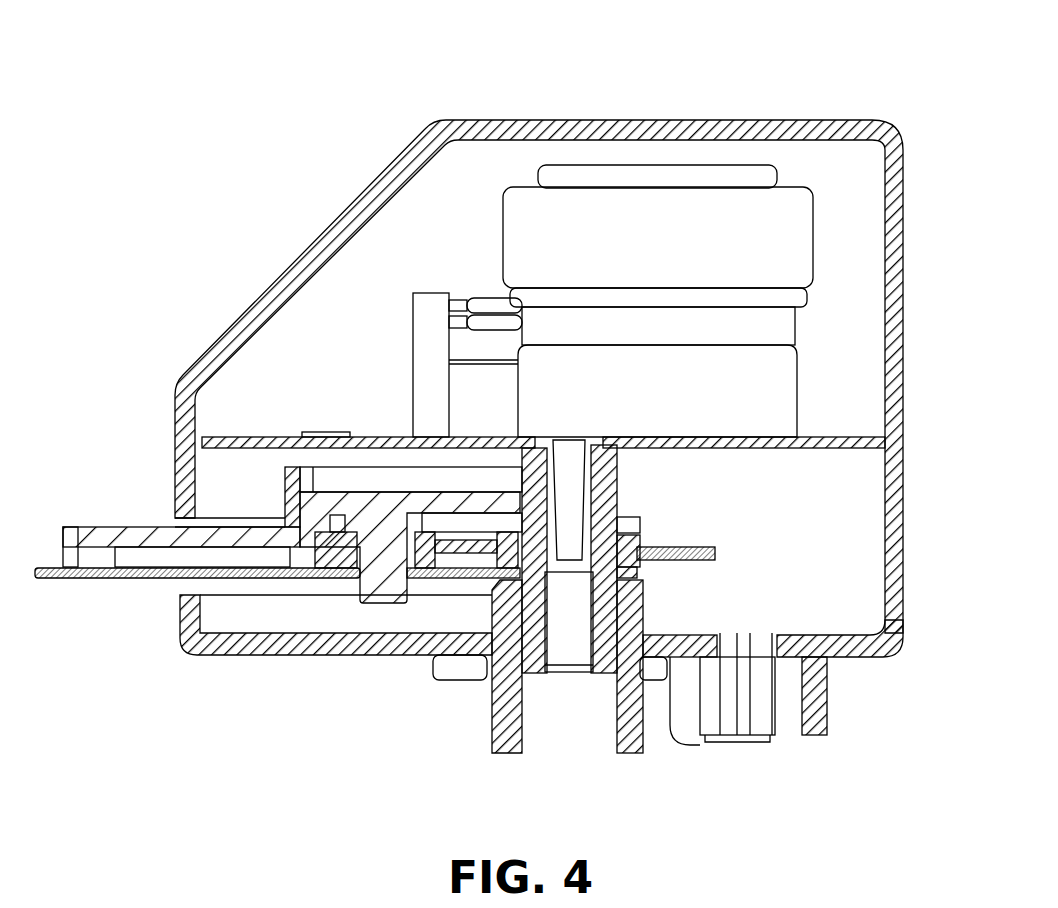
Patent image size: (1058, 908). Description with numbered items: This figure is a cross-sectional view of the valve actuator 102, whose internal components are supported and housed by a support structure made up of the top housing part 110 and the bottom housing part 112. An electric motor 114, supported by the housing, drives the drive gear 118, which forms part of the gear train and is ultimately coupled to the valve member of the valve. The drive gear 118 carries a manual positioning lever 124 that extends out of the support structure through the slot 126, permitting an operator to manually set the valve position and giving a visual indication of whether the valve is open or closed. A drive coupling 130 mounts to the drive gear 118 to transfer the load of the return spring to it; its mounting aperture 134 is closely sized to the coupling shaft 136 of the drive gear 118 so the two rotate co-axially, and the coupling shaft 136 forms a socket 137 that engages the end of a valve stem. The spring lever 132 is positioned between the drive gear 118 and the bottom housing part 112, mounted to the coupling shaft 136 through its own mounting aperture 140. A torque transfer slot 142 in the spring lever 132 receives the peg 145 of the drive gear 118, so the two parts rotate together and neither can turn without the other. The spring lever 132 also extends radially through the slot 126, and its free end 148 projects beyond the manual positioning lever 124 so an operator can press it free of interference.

The valve actuator 102 is at (413, 80).
The top housing part 110 is at (340, 217).
The bottom housing part 112 is at (220, 645).
The electric motor 114 is at (645, 180).
The drive gear 118 is at (300, 470).
The manual positioning lever 124 is at (72, 528).
The slot 126 is at (165, 518).
The drive coupling 130 is at (428, 565).
The spring lever 132 is at (160, 578).
The mounting aperture 134 is at (640, 567).
The coupling shaft 136 is at (538, 645).
The socket 137 is at (573, 668).
The mounting aperture 140 is at (500, 682).
The torque transfer slot 142 is at (452, 590).
The peg 145 is at (380, 607).
The free end 148 is at (37, 578).